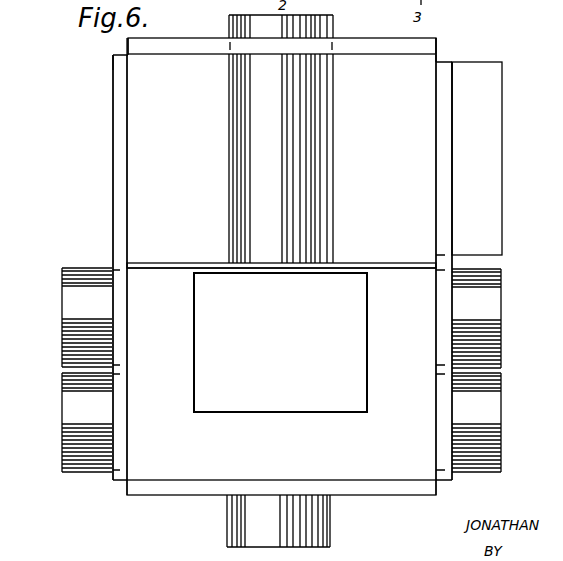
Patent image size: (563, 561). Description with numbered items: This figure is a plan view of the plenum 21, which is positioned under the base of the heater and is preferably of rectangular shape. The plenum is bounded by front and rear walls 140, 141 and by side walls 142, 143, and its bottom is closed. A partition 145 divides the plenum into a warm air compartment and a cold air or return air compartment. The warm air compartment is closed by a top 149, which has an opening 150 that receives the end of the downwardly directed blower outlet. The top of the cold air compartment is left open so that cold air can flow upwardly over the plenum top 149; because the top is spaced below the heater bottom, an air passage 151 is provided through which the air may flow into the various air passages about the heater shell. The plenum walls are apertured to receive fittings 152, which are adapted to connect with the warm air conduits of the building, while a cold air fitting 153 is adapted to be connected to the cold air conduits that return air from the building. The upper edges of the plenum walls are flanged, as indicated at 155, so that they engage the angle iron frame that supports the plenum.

The plenum 21 is at (422, 159).
The front wall 140 is at (436, 207).
The rear wall 141 is at (127, 170).
The side wall 142 is at (175, 480).
The side wall 143 is at (372, 55).
The partition 145 is at (177, 263).
The top 149 is at (388, 277).
The opening 150 is at (197, 388).
The air passage 151 is at (128, 110).
The fittings 152 is at (318, 174).
The cold air fitting 153 is at (495, 197).
The flange 155 is at (442, 62).